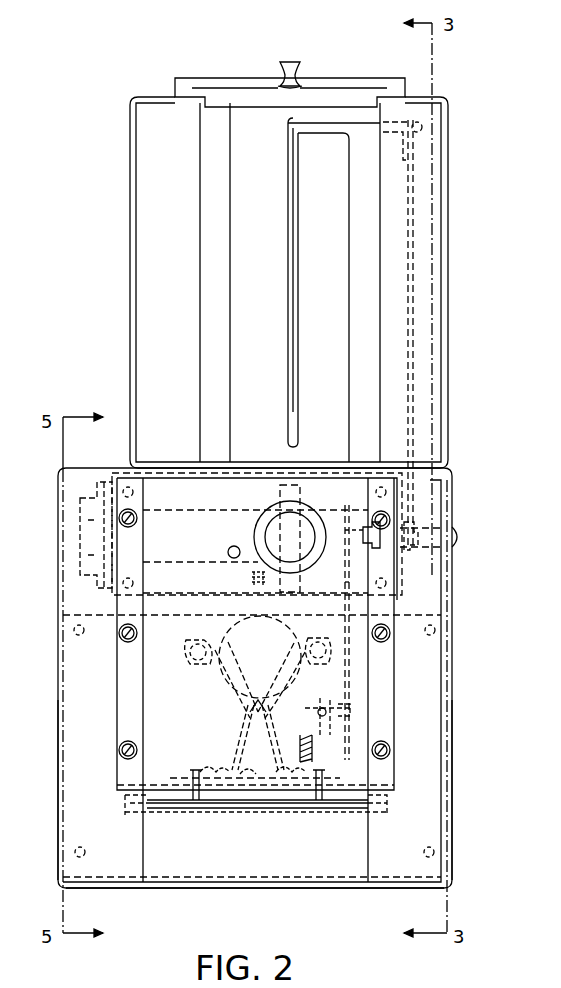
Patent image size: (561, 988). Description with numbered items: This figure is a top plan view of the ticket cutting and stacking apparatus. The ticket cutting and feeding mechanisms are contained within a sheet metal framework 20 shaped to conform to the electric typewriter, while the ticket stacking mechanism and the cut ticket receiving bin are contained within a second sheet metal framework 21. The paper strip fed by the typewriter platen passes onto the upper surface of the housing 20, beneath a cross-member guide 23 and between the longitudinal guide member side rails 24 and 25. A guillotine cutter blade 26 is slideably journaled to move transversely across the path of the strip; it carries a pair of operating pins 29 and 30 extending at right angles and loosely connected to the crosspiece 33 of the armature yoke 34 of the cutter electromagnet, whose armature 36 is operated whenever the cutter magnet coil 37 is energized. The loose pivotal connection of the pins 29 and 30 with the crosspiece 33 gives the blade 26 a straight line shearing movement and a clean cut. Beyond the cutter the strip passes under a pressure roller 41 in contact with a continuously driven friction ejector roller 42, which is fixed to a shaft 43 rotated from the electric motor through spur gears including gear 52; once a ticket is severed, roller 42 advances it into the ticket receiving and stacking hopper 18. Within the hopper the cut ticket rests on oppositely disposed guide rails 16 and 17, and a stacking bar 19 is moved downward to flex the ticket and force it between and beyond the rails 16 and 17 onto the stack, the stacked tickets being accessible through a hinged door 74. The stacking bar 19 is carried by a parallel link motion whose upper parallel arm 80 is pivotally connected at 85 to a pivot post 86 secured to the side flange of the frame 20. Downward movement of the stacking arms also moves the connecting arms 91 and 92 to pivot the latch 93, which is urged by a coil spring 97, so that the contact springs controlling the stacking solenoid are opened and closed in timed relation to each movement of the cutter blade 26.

The guide rail 16 is at (230, 322).
The guide rail 17 is at (349, 213).
The ticket receiving and stacking hopper 18 is at (386, 272).
The stacking bar 19 is at (288, 233).
The framework 20 is at (455, 583).
The framework 21 is at (448, 367).
The cross-member guide 23 is at (288, 870).
The guide member side rail 24 is at (454, 793).
The guide member side rail 25 is at (65, 793).
The guillotine cutter blade 26 is at (273, 800).
The operating pin 29 is at (195, 768).
The operating pin 30 is at (320, 770).
The crosspiece 33 is at (242, 776).
The armature yoke 34 is at (240, 738).
The armature 36 is at (200, 636).
The cutter magnet coil 37 is at (218, 684).
The pressure roller 41 is at (275, 510).
The ejector roller 42 is at (300, 490).
The shaft 43 is at (345, 520).
The spur gear 52 is at (100, 517).
The door 74 is at (332, 96).
The parallel arm 80 is at (410, 320).
The pivotal connection 85 is at (413, 528).
The pivot post 86 is at (430, 548).
The connecting arm 91 is at (375, 540).
The connecting arm 92 is at (345, 582).
The latch 93 is at (322, 705).
The coil spring 97 is at (300, 745).